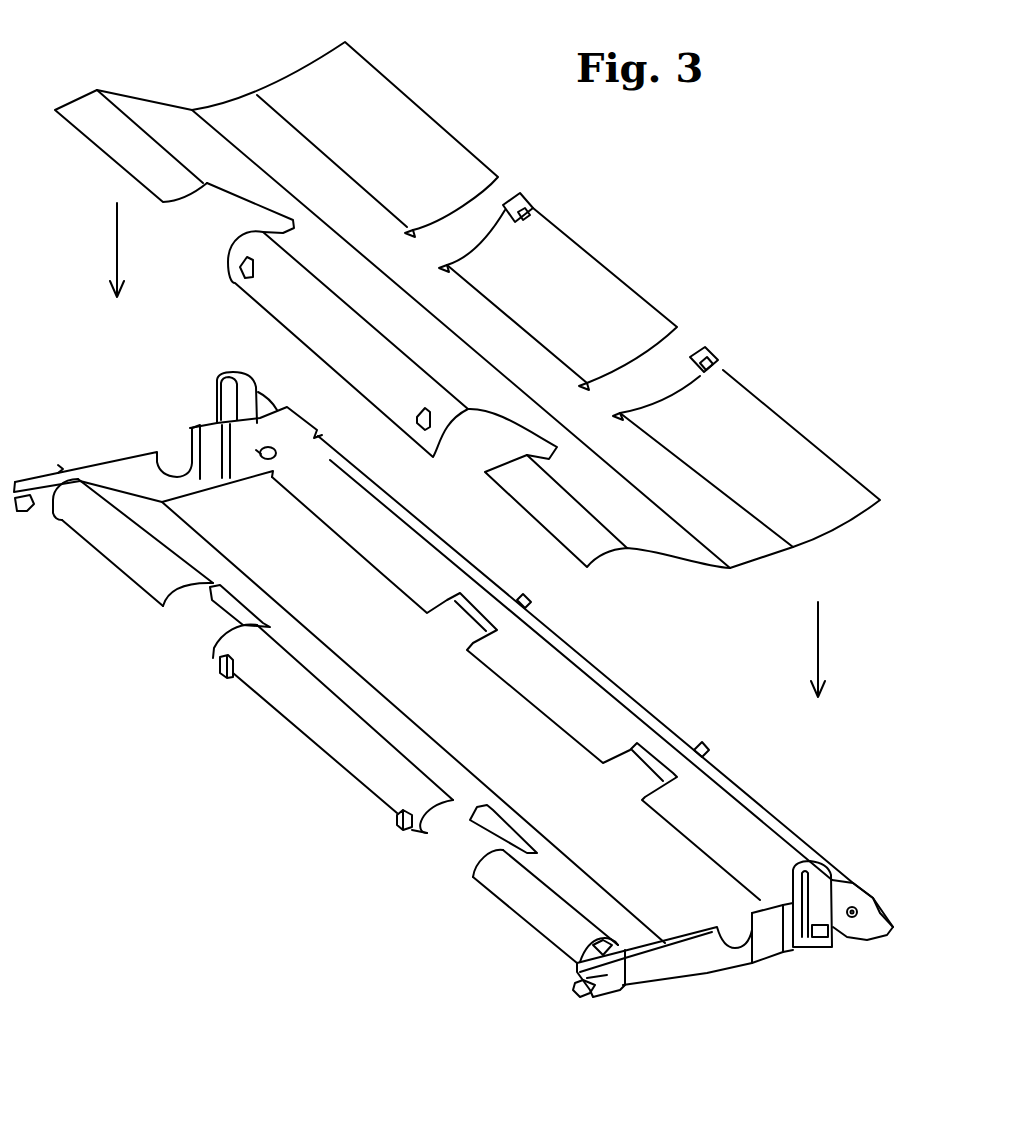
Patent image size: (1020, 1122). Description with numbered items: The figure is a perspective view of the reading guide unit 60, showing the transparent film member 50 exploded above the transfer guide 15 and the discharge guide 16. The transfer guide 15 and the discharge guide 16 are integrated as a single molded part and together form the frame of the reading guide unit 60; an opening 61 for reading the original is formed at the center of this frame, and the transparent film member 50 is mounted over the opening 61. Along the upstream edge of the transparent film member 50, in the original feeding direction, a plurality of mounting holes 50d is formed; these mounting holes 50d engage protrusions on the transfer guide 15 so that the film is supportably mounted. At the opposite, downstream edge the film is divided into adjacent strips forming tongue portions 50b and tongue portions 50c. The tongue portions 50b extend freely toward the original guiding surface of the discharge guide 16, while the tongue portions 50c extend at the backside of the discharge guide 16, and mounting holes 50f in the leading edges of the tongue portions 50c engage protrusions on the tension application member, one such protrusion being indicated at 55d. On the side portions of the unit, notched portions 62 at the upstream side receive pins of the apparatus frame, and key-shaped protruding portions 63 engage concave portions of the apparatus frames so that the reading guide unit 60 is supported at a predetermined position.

The transparent film member 50 is at (420, 123).
The tongue portions 50b is at (607, 280).
The tongue portions 50c is at (697, 353).
The mounting holes 50f is at (717, 362).
The mounting holes 50d is at (240, 263).
The transfer guide 15 is at (123, 560).
The discharge guide 16 is at (590, 702).
The positioning projection 55d is at (703, 750).
The reading guide unit 60 is at (223, 827).
The opening 61 is at (447, 713).
The notched portions 62 is at (595, 997).
The protruding portions 63 is at (817, 877).